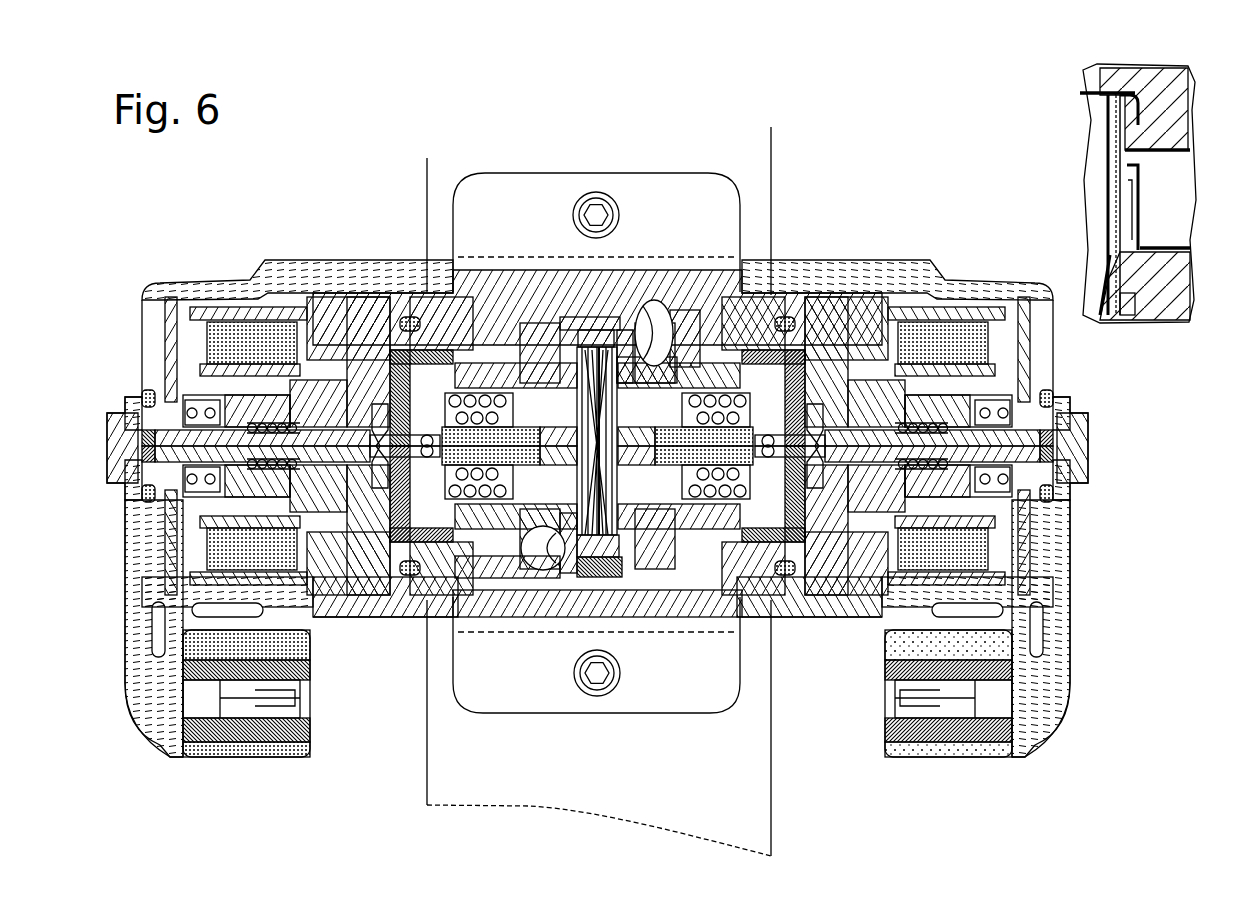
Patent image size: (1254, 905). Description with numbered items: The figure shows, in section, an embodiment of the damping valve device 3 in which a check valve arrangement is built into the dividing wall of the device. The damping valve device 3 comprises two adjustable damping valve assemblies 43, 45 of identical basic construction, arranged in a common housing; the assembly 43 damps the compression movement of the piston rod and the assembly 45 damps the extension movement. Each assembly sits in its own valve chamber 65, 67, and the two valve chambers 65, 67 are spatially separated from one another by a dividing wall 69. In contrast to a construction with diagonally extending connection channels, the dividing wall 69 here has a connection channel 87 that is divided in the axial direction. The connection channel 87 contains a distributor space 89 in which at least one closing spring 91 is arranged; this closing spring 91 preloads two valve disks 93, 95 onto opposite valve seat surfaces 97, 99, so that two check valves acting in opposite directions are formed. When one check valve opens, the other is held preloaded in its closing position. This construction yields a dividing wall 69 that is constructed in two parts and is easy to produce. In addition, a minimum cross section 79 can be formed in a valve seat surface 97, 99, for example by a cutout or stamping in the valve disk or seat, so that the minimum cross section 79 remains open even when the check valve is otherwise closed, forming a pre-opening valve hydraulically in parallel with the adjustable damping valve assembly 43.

The damping valve device 3 is at (827, 164).
The damping valve assembly 43 is at (879, 238).
The damping valve assembly 45 is at (323, 238).
The valve chamber 65 is at (688, 582).
The valve chamber 67 is at (493, 585).
The dividing wall 69 is at (645, 310).
The minimum cross section 79 is at (1108, 214).
The connection channel 87 is at (630, 323).
The distributor space 89 is at (587, 348).
The closing spring 91 is at (597, 352).
The valve disk 93 is at (592, 548).
The valve disk 95 is at (582, 548).
The valve seat surface 97 is at (620, 362).
The valve seat surface 99 is at (533, 585).